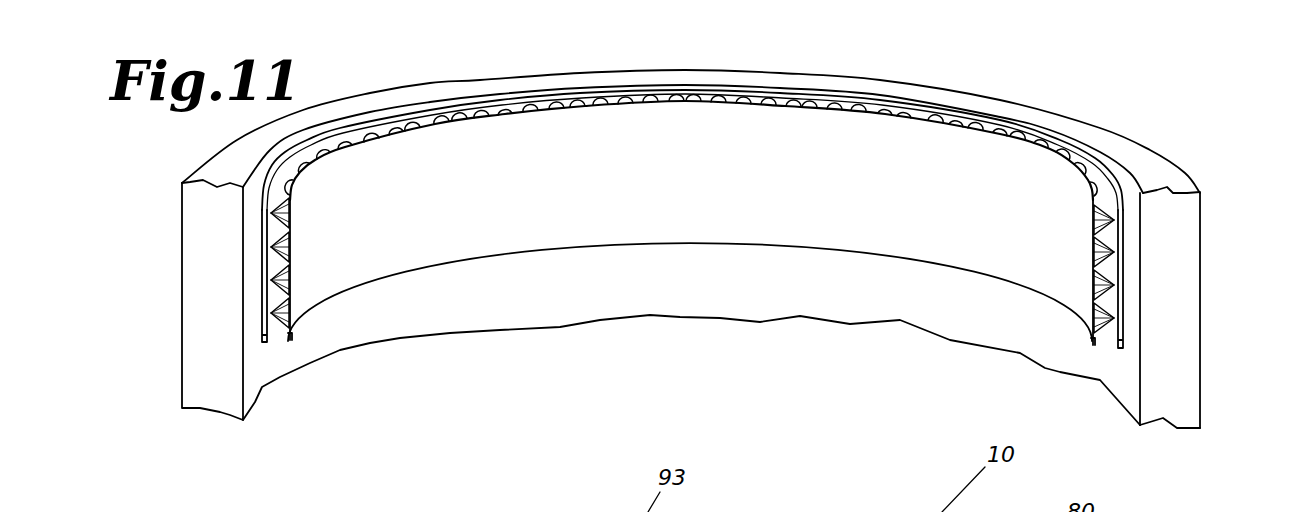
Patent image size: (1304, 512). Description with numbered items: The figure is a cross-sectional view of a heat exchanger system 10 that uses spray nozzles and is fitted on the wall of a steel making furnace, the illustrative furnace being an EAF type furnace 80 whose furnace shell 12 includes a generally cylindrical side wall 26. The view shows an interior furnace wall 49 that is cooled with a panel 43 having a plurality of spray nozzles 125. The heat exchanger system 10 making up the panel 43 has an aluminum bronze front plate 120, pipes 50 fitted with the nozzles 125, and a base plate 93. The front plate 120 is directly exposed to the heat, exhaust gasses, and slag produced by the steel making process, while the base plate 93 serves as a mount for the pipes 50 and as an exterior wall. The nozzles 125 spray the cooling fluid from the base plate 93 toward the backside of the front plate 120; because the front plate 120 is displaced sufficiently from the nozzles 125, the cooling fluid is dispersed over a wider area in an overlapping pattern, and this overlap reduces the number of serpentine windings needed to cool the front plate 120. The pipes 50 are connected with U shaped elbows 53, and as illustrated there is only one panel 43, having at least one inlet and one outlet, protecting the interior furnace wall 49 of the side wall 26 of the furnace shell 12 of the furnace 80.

The gasket assembly 10 is at (1032, 87).
The furnace shell 12 is at (1168, 430).
The cylindrical side wall 26 is at (1168, 295).
The panel 43 is at (583, 193).
The interior furnace wall 49 is at (847, 225).
The pipes 50 is at (268, 257).
The U shaped elbows 53 is at (378, 120).
The EAF type furnace 80 is at (1142, 140).
The base plate 93 is at (563, 82).
The aluminum bronze front plate 120 is at (306, 297).
The spray nozzles 125 is at (270, 313).